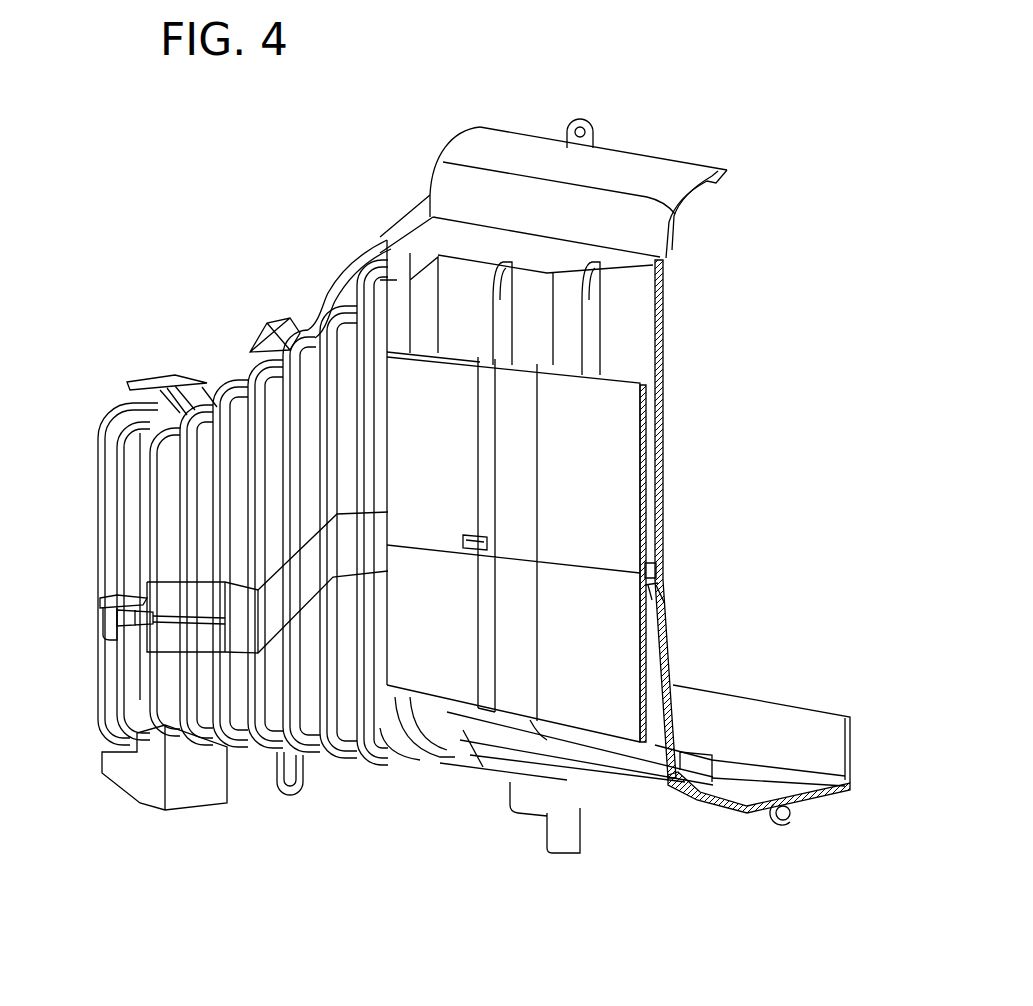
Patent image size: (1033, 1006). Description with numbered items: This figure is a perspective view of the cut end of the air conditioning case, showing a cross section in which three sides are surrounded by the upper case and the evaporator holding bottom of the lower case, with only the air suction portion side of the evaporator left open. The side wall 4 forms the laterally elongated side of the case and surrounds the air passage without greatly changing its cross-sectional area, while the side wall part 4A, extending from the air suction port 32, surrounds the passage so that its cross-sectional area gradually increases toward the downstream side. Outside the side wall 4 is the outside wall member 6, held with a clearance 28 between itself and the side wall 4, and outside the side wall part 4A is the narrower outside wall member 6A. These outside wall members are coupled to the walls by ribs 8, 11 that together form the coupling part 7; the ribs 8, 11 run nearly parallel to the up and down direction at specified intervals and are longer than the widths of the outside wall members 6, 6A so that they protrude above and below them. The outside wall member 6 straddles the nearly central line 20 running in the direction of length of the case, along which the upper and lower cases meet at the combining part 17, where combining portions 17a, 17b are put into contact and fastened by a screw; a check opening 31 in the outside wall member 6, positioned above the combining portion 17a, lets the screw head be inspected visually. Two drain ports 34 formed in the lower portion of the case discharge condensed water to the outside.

The side wall 4 is at (660, 440).
The side wall part 4A is at (244, 536).
The outside wall member 6 is at (607, 420).
The outside wall member 6A is at (246, 745).
The coupling part 7 is at (503, 307).
The rib 8 is at (524, 573).
The rib 11 is at (524, 573).
The combining part 17 is at (733, 589).
The combining portion 17a is at (658, 561).
The combining portion 17b is at (660, 598).
The nearly central line 20 is at (370, 743).
The clearance 28 is at (652, 490).
The check opening 31 is at (463, 550).
The air suction port 32 is at (100, 557).
The drain port 34 is at (562, 857).